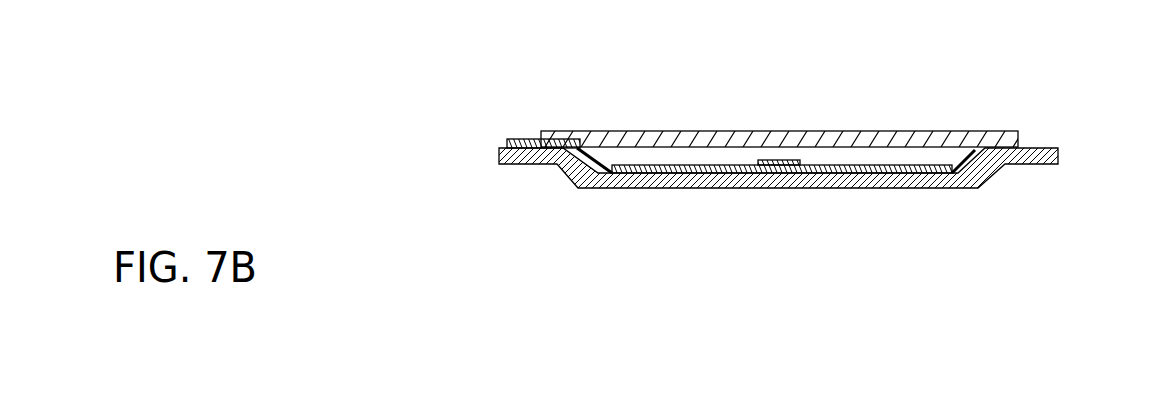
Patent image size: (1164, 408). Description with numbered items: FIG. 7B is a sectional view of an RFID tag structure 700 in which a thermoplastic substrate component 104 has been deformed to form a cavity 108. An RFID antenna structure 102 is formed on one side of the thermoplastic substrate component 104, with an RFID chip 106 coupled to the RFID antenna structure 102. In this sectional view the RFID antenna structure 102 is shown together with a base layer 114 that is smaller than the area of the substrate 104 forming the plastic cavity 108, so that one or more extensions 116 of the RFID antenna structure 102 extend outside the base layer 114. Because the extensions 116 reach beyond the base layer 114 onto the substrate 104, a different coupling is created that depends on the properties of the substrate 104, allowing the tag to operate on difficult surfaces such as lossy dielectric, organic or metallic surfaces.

The plastic cavity structure 700 is at (1036, 247).
The RFID antenna structure 102 is at (882, 168).
The thermoplastic substrate component 104 is at (1047, 165).
The RFID chip 106 is at (766, 167).
The cavity 108 is at (662, 157).
The base layer 114 is at (1000, 128).
The extension 116 is at (518, 138).